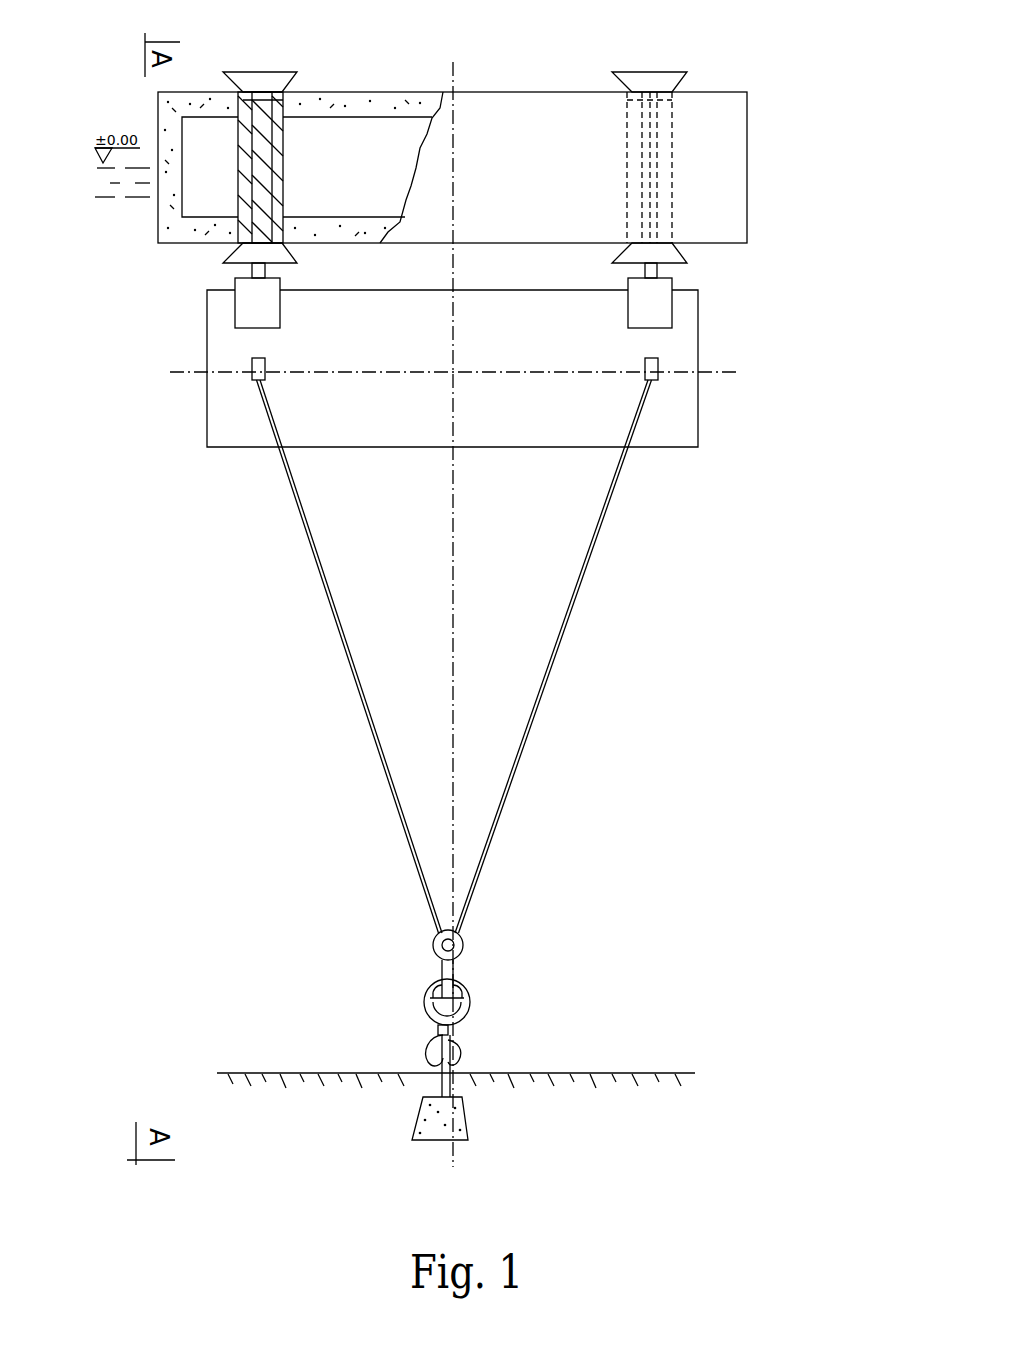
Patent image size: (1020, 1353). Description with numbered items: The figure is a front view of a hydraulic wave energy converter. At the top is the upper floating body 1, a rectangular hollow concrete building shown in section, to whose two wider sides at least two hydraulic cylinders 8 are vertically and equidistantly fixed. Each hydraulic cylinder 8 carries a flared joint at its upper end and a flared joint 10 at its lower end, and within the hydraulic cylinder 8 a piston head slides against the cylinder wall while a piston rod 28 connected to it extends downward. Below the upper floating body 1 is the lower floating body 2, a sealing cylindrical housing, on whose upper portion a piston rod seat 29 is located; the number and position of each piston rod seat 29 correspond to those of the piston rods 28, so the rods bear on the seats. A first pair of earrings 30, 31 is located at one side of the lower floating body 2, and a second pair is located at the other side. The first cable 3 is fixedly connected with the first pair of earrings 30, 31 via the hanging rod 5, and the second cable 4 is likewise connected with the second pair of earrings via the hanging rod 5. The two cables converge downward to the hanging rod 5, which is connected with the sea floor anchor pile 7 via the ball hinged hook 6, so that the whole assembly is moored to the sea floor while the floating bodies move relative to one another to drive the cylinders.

The upper floating body 1 is at (158, 130).
The lower floating body 2 is at (207, 340).
The first cable 3 is at (573, 600).
The second cable 4 is at (684, 75).
The hanging rod 5 is at (435, 933).
The ball hinged hook 6 is at (425, 990).
The sea floor anchor pile 7 is at (422, 1103).
The hydraulic cylinder 8 is at (670, 170).
The flared joint 10 is at (680, 257).
The piston rod 28 is at (658, 272).
The piston rod seat 29 is at (672, 315).
The first pair of earrings 30 is at (265, 366).
The first pair of earrings 31 is at (658, 372).